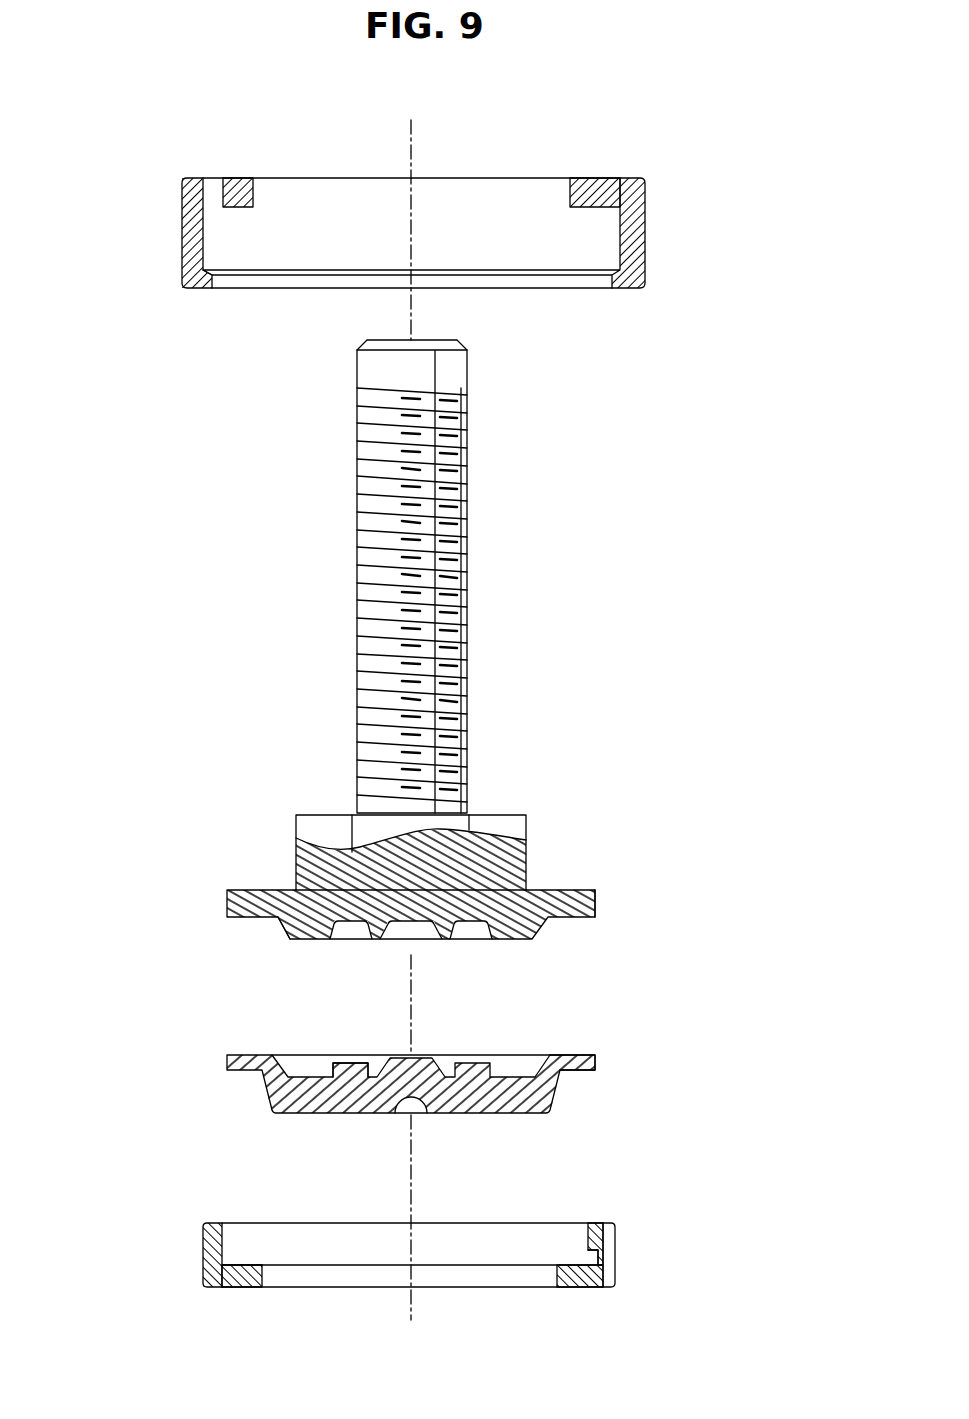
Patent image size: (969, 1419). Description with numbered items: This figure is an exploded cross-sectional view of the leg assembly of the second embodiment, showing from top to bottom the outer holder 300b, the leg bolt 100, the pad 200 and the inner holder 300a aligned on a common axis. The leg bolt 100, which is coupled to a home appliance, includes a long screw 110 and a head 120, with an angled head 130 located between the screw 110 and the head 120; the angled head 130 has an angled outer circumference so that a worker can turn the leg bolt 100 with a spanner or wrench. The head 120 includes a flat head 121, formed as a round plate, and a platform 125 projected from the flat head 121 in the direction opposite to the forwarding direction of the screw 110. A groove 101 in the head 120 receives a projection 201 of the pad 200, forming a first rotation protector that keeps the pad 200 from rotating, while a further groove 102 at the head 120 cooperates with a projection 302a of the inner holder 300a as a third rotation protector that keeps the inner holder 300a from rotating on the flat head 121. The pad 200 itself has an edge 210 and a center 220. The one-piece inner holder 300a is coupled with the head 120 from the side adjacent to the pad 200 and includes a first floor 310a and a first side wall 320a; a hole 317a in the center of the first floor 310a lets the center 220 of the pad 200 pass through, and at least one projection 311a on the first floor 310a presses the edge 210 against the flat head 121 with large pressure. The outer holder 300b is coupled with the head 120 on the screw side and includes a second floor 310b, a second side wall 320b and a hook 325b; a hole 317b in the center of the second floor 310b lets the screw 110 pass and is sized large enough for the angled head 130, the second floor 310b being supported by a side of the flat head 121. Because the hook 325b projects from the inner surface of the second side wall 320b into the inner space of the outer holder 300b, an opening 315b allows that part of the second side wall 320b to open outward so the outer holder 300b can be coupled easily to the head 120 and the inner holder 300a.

The leg bolt 100 is at (376, 665).
The screw 110 is at (367, 645).
The angled head 130 is at (328, 818).
The head 120 is at (376, 910).
The flat head 121 is at (227, 900).
The platform 125 is at (290, 932).
The groove 101 is at (350, 930).
The groove 102 is at (597, 905).
The pad 200 is at (358, 1080).
The projection 201 is at (350, 1062).
The edge 210 is at (578, 1054).
The center 220 is at (490, 1105).
The outer holder 300b is at (419, 221).
The second floor 310b is at (237, 177).
The opening 315b is at (213, 187).
The hole 317b is at (485, 192).
The second side wall 320b is at (192, 212).
The hook 325b is at (212, 287).
The inner holder 300a is at (348, 1256).
The first floor 310a is at (245, 1278).
The projection 311a is at (258, 1264).
The projection 302a is at (582, 1240).
The first side wall 320a is at (203, 1248).
The hole 317a is at (489, 1275).